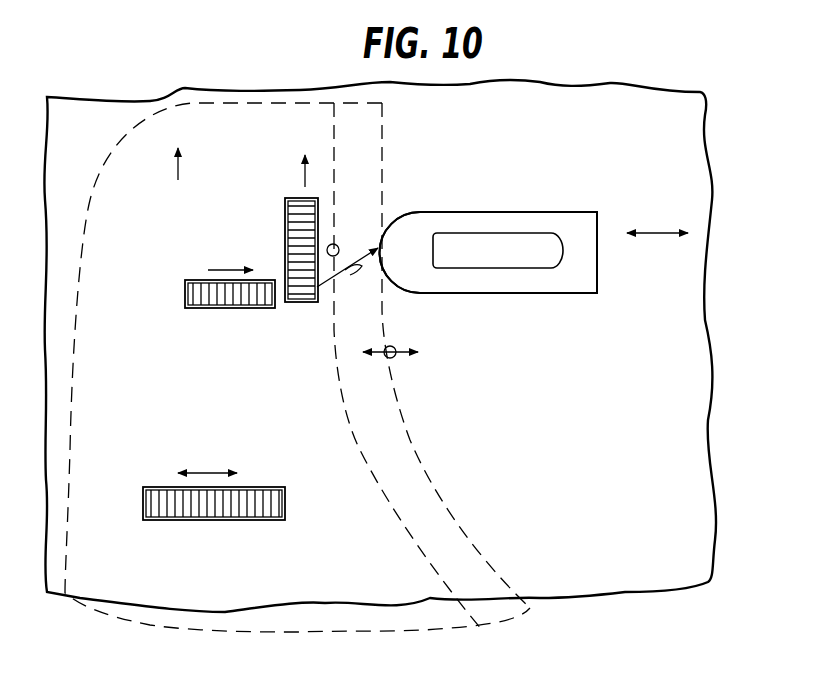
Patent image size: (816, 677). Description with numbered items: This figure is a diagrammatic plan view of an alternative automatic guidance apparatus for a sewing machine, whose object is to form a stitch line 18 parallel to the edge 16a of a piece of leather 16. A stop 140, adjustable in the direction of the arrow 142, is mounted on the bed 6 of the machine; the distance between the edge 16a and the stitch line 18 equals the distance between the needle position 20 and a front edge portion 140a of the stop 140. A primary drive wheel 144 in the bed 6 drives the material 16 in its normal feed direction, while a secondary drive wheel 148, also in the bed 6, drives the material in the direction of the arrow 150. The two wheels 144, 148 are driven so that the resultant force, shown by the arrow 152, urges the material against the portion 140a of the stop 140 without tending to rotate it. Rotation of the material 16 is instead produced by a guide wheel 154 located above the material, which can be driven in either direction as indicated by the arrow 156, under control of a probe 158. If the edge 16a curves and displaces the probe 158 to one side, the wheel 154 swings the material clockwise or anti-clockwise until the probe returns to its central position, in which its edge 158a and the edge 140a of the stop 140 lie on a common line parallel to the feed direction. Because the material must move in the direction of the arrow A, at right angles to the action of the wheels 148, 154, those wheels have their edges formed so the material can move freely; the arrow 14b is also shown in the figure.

The bed 6 is at (595, 578).
The leather 16 is at (240, 118).
The edge 16a is at (383, 143).
The stitch line 18 is at (343, 398).
The needle position 20 is at (336, 256).
The stop 140 is at (556, 212).
The front edge portion 140a is at (385, 247).
The arrow 142 is at (665, 232).
The primary drive wheel 144 is at (298, 214).
The secondary drive wheel 148 is at (197, 283).
The arrow 150 is at (222, 265).
The arrow 152 is at (380, 252).
The guide wheel 154 is at (247, 510).
The arrow 156 is at (210, 470).
The probe 158 is at (394, 358).
The edge 158a is at (392, 345).
The direction arrow 14b is at (300, 180).
The arrow A is at (175, 168).